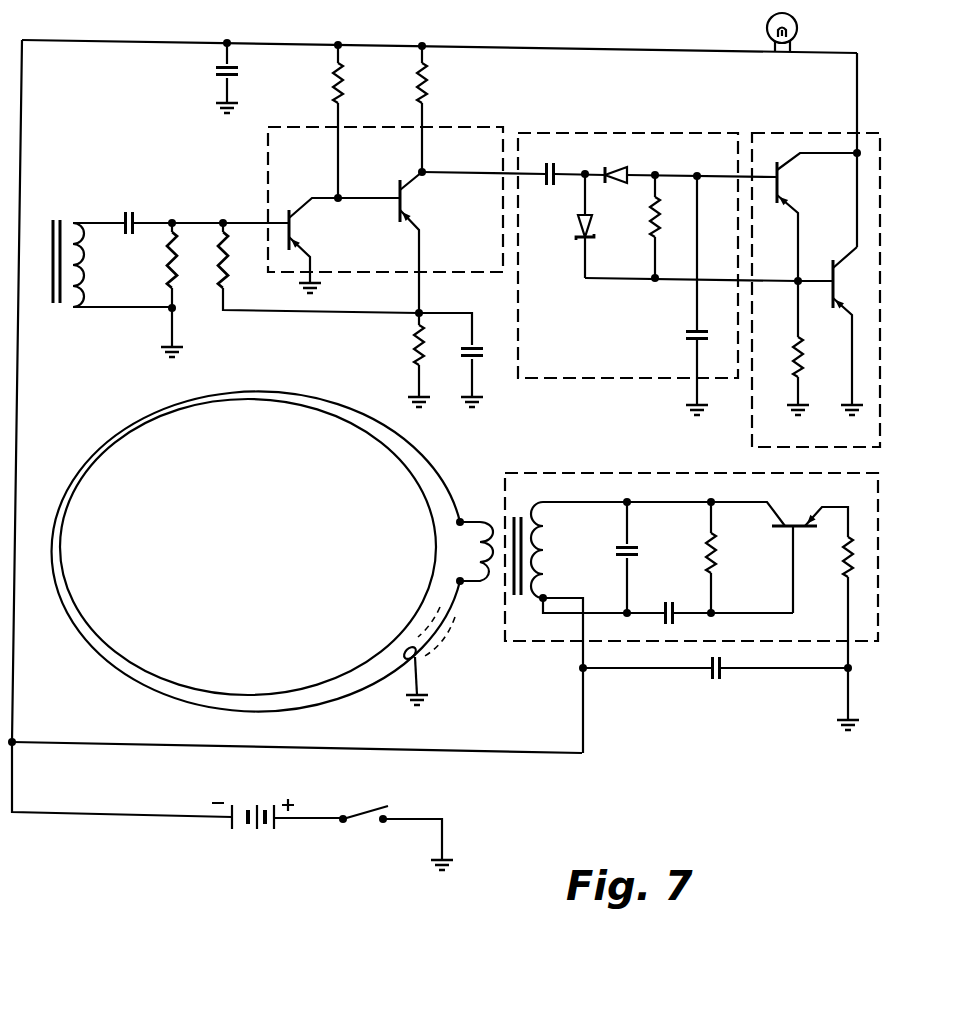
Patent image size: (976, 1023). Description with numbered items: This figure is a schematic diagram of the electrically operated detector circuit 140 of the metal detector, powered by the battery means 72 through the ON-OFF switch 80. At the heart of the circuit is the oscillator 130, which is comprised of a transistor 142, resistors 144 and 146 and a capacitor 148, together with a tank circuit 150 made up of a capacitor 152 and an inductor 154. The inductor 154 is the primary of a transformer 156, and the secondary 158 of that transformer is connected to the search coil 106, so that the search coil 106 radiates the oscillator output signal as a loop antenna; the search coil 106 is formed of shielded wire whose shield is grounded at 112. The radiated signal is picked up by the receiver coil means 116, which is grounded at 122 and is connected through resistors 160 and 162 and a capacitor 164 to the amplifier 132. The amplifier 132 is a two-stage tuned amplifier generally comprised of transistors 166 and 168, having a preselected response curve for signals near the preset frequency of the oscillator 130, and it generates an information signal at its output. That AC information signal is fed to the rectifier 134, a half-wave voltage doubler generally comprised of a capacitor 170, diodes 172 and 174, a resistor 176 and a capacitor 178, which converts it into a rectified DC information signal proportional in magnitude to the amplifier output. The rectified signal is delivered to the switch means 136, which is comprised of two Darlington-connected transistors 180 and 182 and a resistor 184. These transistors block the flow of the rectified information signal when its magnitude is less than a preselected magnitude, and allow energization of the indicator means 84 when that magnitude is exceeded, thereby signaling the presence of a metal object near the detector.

The battery means 72 is at (262, 800).
The ON-OFF switch 80 is at (375, 807).
The indicator means 84 is at (796, 22).
The search coil 106 is at (296, 387).
The shield ground 112 is at (418, 676).
The receiver coil means 116 is at (70, 328).
The ground 122 is at (173, 338).
The oscillator 130 is at (642, 473).
The amplifier 132 is at (457, 120).
The rectifier 134 is at (655, 120).
The switch means 136 is at (798, 120).
The electrically operated detector circuit 140 is at (620, 37).
The transistor 142 is at (778, 511).
The resistor 144 is at (845, 572).
The resistor 146 is at (714, 562).
The capacitor 148 is at (686, 600).
The tank circuit 150 is at (572, 615).
The capacitor 152 is at (630, 543).
The inductor 154 is at (544, 550).
The transformer 156 is at (473, 512).
The secondary 158 is at (466, 551).
The resistor 160 is at (170, 276).
The resistor 162 is at (233, 276).
The capacitor 164 is at (130, 213).
The transistor 166 is at (293, 226).
The transistor 168 is at (404, 200).
The capacitor 170 is at (562, 160).
The diode 172 is at (618, 170).
The diode 174 is at (577, 232).
The resistor 176 is at (652, 232).
The capacitor 178 is at (694, 330).
The transistor 180 is at (782, 178).
The transistor 182 is at (836, 283).
The resistor 184 is at (801, 363).